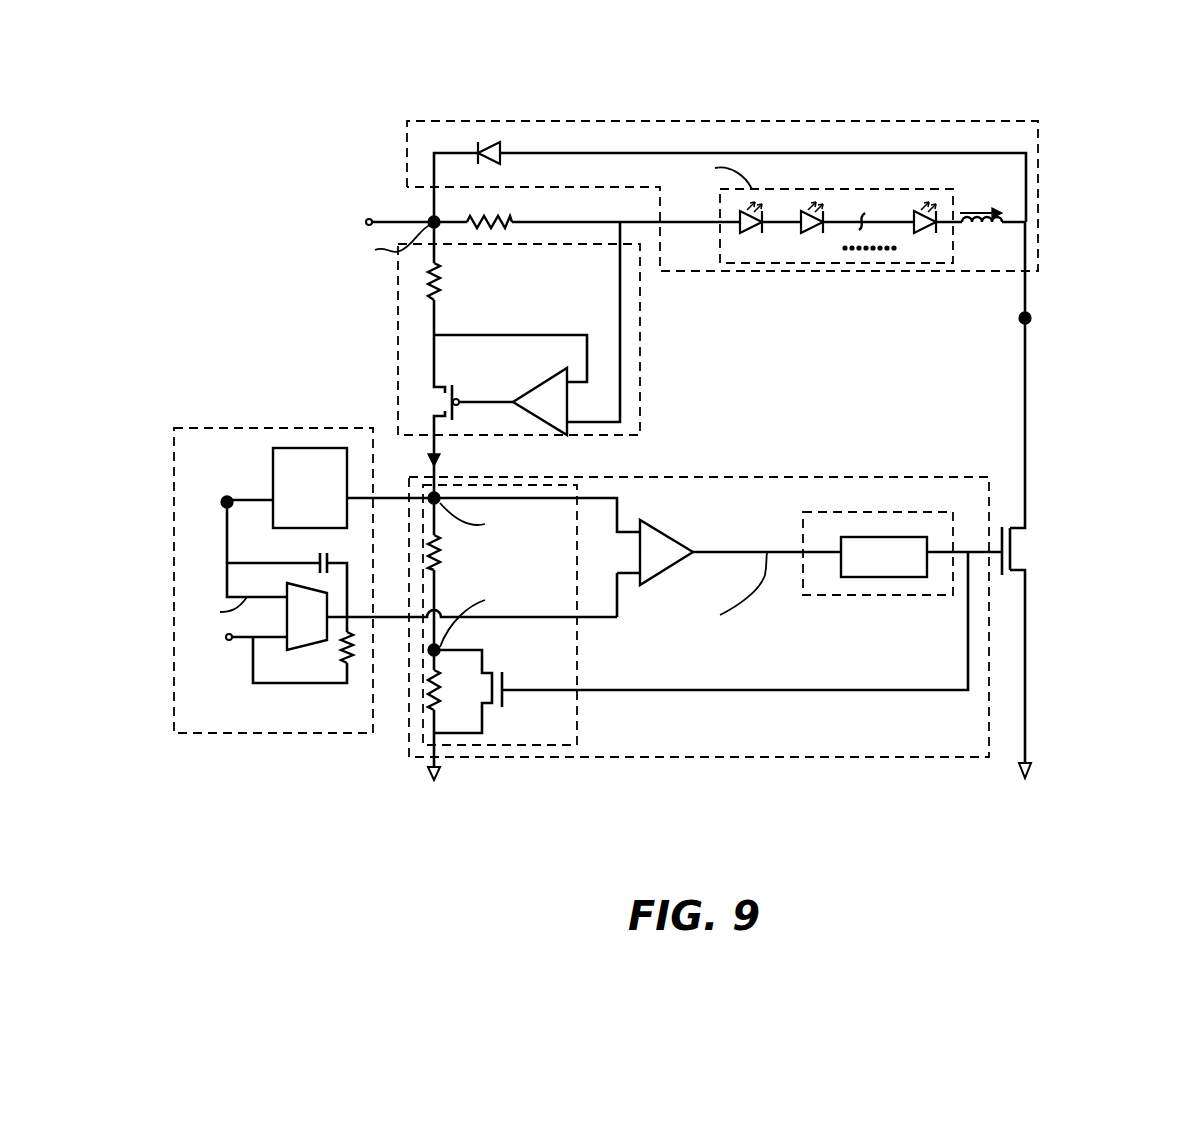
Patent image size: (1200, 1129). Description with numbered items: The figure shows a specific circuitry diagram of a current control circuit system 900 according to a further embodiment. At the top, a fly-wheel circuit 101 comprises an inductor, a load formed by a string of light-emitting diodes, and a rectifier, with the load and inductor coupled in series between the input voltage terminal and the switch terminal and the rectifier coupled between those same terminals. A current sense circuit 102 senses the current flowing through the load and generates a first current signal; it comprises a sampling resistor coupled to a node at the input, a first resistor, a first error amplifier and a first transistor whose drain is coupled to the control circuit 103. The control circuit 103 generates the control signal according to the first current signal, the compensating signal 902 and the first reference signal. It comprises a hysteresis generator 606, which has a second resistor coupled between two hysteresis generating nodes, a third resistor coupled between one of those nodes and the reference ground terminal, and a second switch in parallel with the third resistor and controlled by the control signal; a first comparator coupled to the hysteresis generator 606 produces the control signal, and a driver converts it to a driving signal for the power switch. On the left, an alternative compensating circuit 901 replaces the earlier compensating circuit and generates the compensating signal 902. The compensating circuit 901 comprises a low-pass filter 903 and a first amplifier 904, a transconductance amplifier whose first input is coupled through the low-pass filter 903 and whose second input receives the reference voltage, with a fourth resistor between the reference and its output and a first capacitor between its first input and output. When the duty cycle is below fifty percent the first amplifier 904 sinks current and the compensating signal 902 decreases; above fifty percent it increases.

The current control circuit system 900 is at (1050, 90).
The fly-wheel circuit 101 is at (407, 143).
The current sense circuit 102 is at (398, 340).
The control circuit 103 is at (730, 758).
The hysteresis generator 606 is at (577, 660).
The compensating circuit 901 is at (223, 428).
The compensating signal 902 is at (400, 617).
The low-pass filter 903 is at (323, 448).
The first amplifier 904 is at (280, 650).